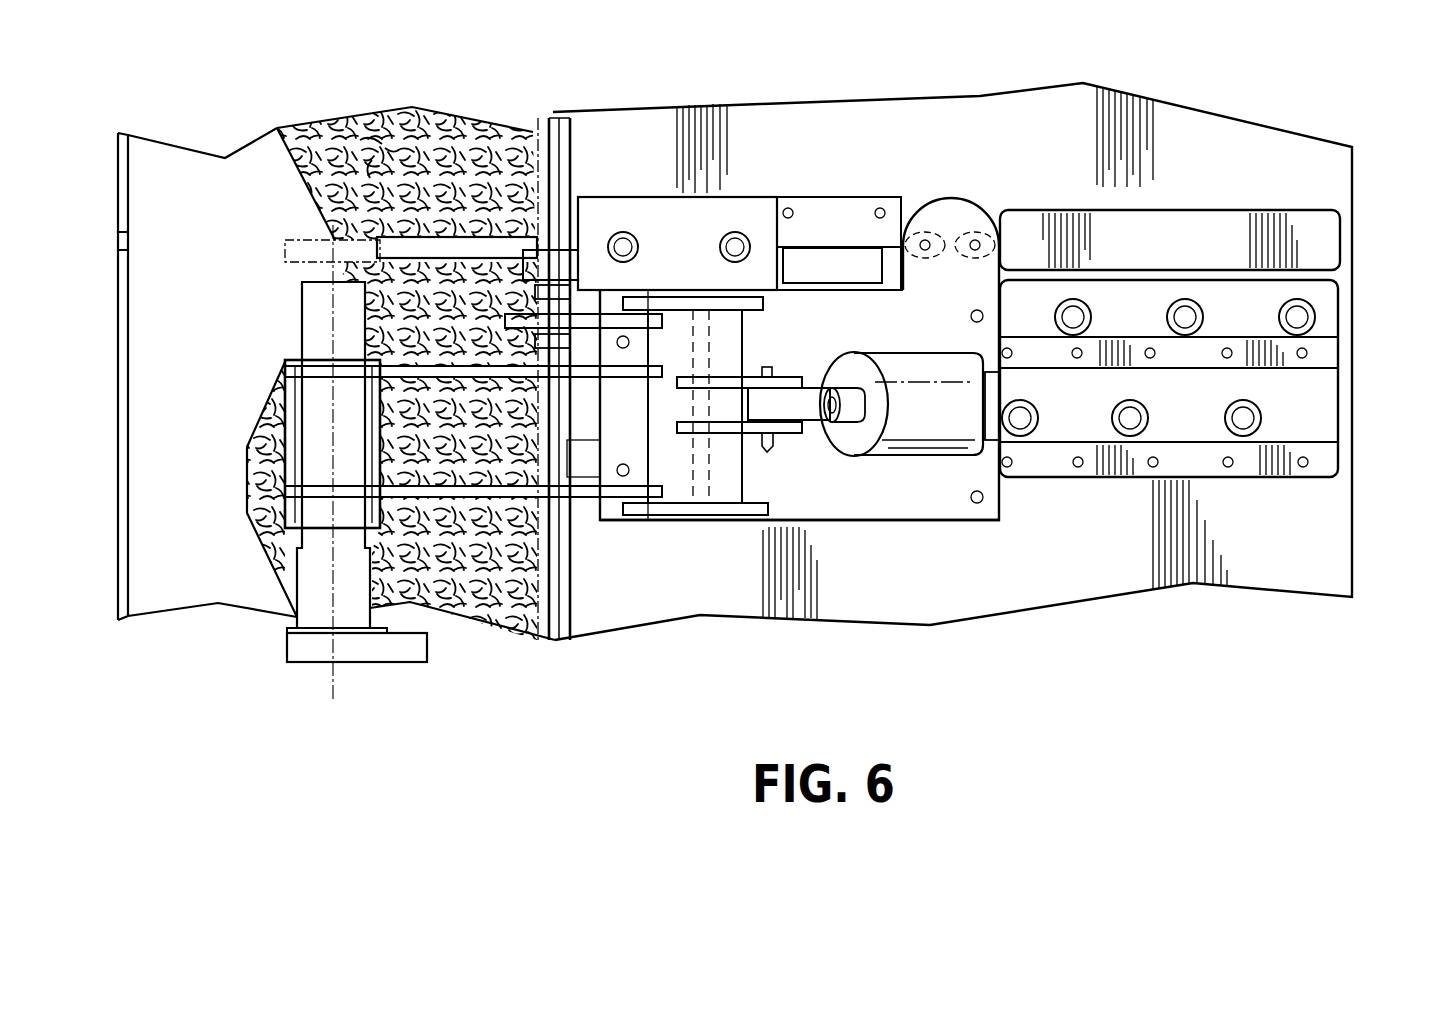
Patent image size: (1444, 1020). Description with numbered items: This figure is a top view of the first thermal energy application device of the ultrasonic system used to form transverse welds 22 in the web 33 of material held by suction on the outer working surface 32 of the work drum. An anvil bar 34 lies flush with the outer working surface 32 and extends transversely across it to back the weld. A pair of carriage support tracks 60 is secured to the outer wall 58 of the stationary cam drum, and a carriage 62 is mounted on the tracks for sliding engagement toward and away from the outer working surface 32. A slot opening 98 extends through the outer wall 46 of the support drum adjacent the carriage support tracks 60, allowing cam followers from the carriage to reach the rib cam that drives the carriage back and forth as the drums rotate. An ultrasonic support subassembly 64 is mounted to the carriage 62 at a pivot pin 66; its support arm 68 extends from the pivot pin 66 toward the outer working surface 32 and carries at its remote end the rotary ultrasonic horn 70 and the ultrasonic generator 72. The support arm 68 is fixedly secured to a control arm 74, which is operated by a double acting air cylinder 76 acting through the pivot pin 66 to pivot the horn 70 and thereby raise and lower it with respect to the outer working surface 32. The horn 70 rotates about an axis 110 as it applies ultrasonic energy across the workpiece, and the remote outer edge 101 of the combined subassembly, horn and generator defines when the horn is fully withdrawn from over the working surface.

The weld 22 is at (421, 170).
The outer working surface 32 is at (112, 182).
The web 33 is at (373, 153).
The anvil bar 34 is at (122, 245).
The outer wall of support drum 46 is at (758, 135).
The outer wall of cam drum 58 is at (1218, 232).
The carriage support track 60 is at (1295, 442).
The carriage 62 is at (886, 332).
The ultrasonic support subassembly 64 is at (712, 527).
The pivot pin 66 is at (712, 447).
The support arm 68 is at (487, 598).
The rotary ultrasonic horn 70 is at (322, 250).
The ultrasonic generator 72 is at (313, 593).
The control arm 74 is at (667, 512).
The double acting air cylinder 76 is at (923, 432).
The slot opening 98 is at (1100, 218).
The remote outer edge 101 is at (247, 487).
The axis 110 is at (330, 625).